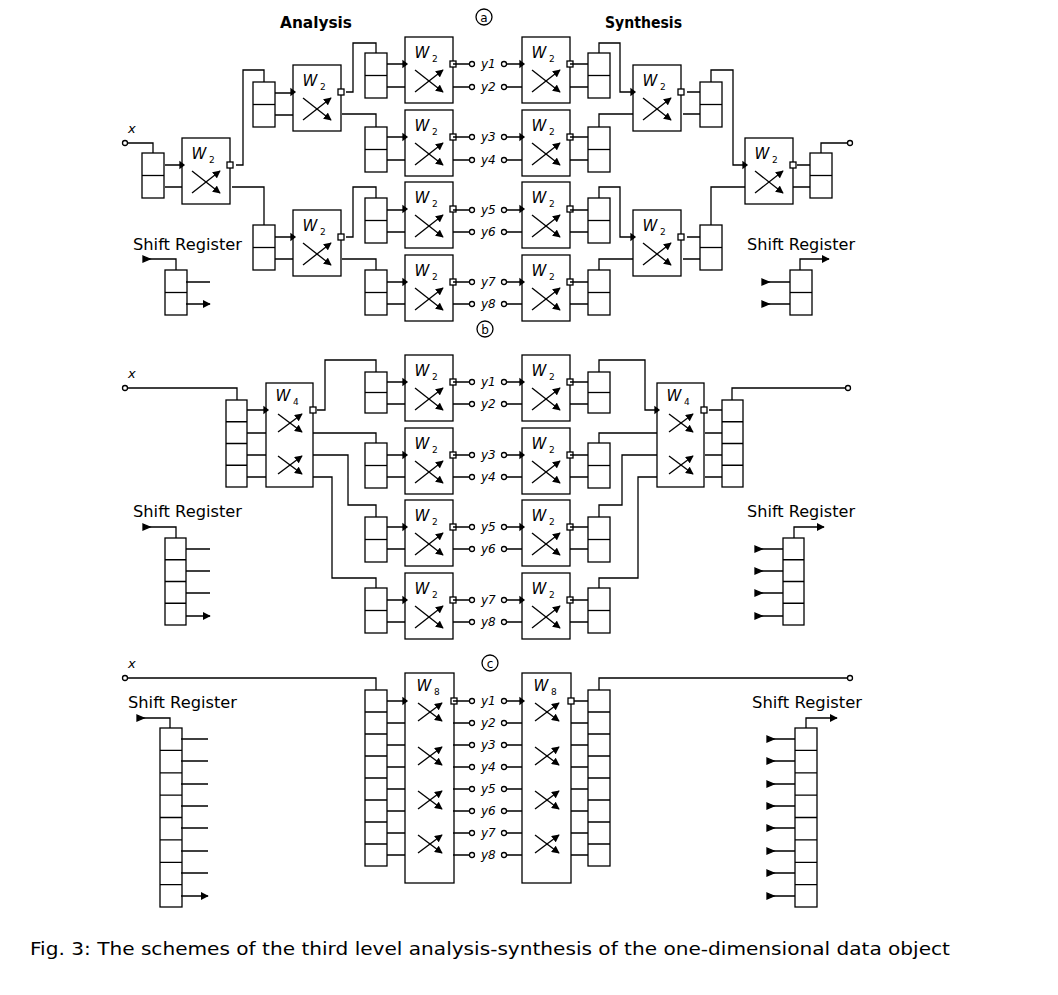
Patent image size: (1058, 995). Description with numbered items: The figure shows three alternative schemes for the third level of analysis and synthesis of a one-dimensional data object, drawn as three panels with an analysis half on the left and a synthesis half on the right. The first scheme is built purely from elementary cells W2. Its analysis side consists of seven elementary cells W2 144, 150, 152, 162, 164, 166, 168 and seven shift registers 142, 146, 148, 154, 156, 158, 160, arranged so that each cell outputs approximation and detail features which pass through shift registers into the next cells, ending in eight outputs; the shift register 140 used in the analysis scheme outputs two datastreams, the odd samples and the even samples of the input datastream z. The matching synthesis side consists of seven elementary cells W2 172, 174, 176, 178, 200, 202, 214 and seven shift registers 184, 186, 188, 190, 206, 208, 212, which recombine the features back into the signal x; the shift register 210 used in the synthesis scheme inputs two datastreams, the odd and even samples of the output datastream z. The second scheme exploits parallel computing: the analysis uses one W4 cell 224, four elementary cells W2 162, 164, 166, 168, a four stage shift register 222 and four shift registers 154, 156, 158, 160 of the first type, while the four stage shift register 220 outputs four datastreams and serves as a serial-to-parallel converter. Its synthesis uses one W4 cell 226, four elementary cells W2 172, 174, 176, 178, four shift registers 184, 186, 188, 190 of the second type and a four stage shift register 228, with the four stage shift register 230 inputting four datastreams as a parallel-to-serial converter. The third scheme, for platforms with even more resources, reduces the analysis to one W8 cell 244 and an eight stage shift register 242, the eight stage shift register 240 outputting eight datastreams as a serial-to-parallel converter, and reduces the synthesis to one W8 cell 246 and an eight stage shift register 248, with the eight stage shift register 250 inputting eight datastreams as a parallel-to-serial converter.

The shift register 140 is at (165, 283).
The shift register 142 is at (150, 198).
The elementary cell W2 144 is at (202, 203).
The shift register 146 is at (271, 82).
The shift register 148 is at (262, 272).
The elementary cell W2 150 is at (313, 130).
The elementary cell W2 152 is at (317, 275).
The shift register 154 is at (380, 53).
The shift register 156 is at (365, 153).
The shift register 158 is at (377, 200).
The shift register 160 is at (363, 287).
The elementary cell W2 162 is at (470, 41).
The elementary cell W2 164 is at (470, 114).
The elementary cell W2 166 is at (470, 186).
The elementary cell W2 168 is at (470, 259).
The elementary cell W2 172 is at (517, 53).
The elementary cell W2 174 is at (517, 126).
The elementary cell W2 176 is at (517, 198).
The elementary cell W2 178 is at (517, 271).
The shift register 184 is at (593, 53).
The shift register 186 is at (610, 152).
The shift register 188 is at (598, 200).
The shift register 190 is at (610, 287).
The elementary cell W2 200 is at (668, 130).
The elementary cell W2 202 is at (653, 198).
The shift register 206 is at (708, 80).
The shift register 208 is at (707, 227).
The shift register 210 is at (810, 287).
The shift register 212 is at (817, 153).
The elementary cell W2 214 is at (748, 138).
The four stage shift register 220 is at (165, 565).
The four stage shift register 222 is at (225, 427).
The W4 cell 224 is at (302, 488).
The W4 cell 226 is at (668, 488).
The four stage shift register 228 is at (743, 428).
The four stage shift register 230 is at (807, 567).
The eight stage shift register 240 is at (160, 803).
The eight stage shift register 242 is at (377, 867).
The W8 cell 244 is at (412, 885).
The W8 cell 246 is at (560, 885).
The eight stage shift register 248 is at (600, 867).
The eight stage shift register 250 is at (817, 805).